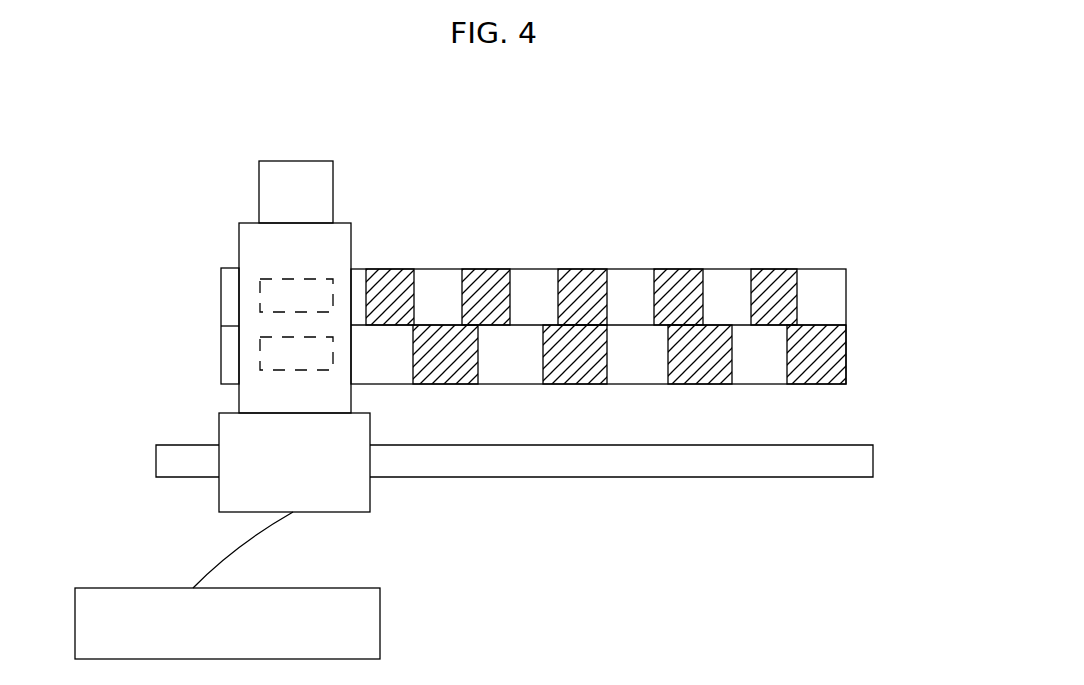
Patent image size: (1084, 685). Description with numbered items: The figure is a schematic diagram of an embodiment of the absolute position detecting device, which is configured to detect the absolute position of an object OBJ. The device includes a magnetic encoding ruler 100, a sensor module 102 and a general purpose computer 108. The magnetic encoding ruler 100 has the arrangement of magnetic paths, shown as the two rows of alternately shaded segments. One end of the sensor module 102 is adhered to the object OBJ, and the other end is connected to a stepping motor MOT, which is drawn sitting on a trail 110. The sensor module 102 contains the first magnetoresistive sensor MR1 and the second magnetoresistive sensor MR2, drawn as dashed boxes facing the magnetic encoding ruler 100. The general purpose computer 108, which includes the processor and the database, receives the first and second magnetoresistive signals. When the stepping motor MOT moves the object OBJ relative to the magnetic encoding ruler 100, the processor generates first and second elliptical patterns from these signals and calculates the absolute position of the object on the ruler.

The object OBJ is at (297, 161).
The sensor module 102 is at (348, 237).
The first magnetoresistive sensor MR1 is at (262, 297).
The second magnetoresistive sensor MR2 is at (262, 354).
The magnetic encoding ruler 100 is at (847, 293).
The rail / guide 110 is at (677, 466).
The stepping motor MOT is at (370, 512).
The general purpose computer 108 is at (227, 585).